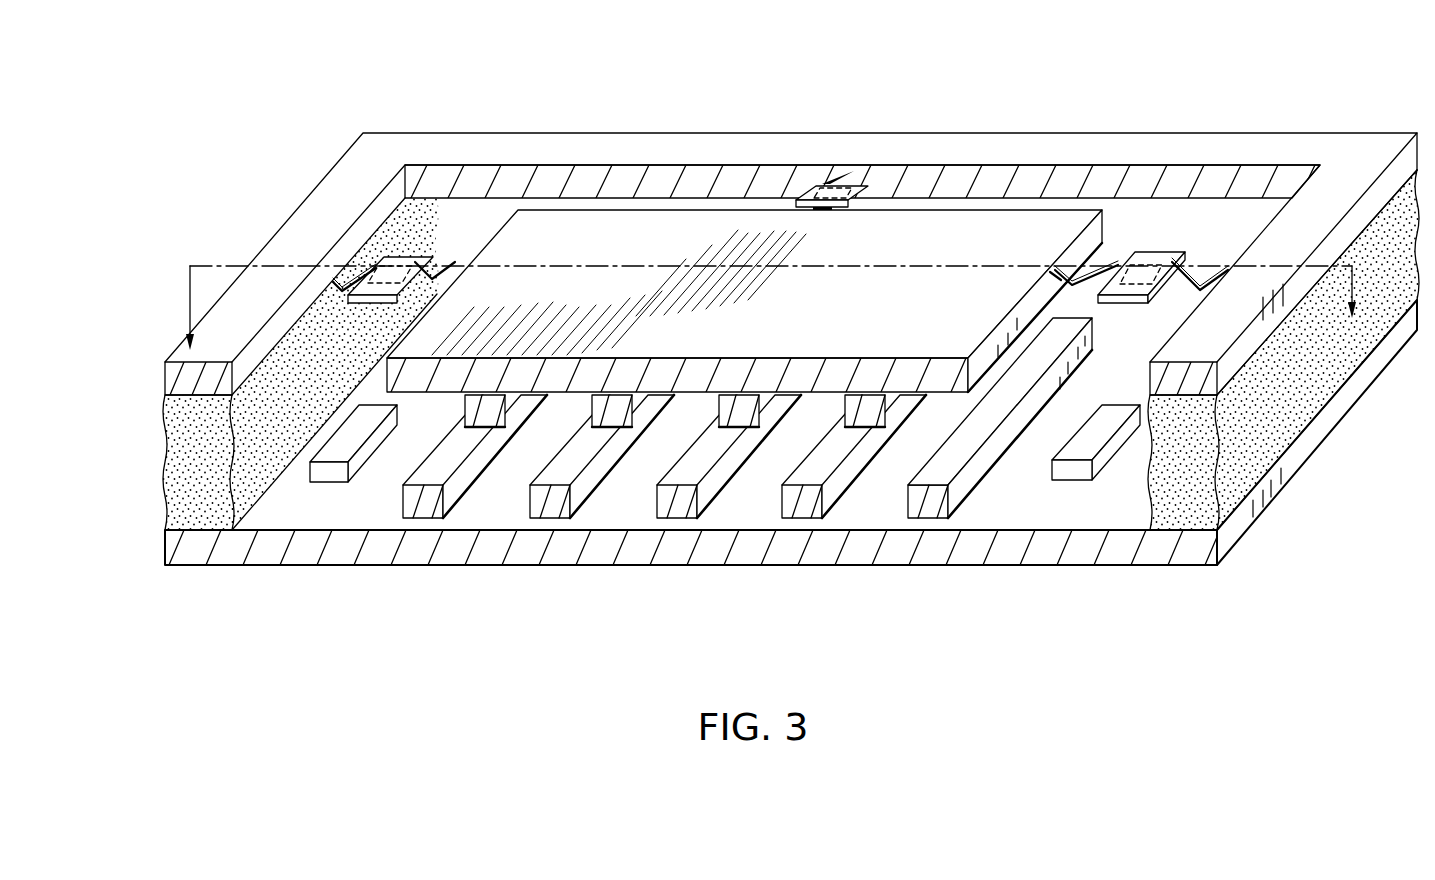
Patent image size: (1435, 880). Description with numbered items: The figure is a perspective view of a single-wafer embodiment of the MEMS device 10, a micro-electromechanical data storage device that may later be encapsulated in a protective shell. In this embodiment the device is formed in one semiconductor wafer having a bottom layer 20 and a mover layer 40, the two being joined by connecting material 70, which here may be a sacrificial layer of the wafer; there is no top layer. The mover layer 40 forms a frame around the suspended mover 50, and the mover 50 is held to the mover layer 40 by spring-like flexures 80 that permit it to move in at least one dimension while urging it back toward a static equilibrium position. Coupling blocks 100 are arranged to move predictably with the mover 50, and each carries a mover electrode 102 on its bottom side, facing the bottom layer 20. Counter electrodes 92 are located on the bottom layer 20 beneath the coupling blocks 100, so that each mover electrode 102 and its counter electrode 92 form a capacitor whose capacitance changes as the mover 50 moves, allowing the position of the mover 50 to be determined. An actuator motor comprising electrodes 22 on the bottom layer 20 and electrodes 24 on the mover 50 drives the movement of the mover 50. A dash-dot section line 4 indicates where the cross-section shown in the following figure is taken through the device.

The MEMS device 10 is at (538, 84).
The bottom layer 20 is at (172, 543).
The electrodes 22 is at (782, 519).
The electrodes 24 is at (612, 436).
The mover layer 40 is at (182, 377).
The mover 50 is at (673, 354).
The connecting material 70 is at (182, 460).
The flexure 80 is at (836, 178).
The counter electrode 92 is at (340, 470).
The coupling block 100 is at (858, 190).
The mover electrode 102 is at (817, 190).
The section line 4–4' 4 is at (769, 306).